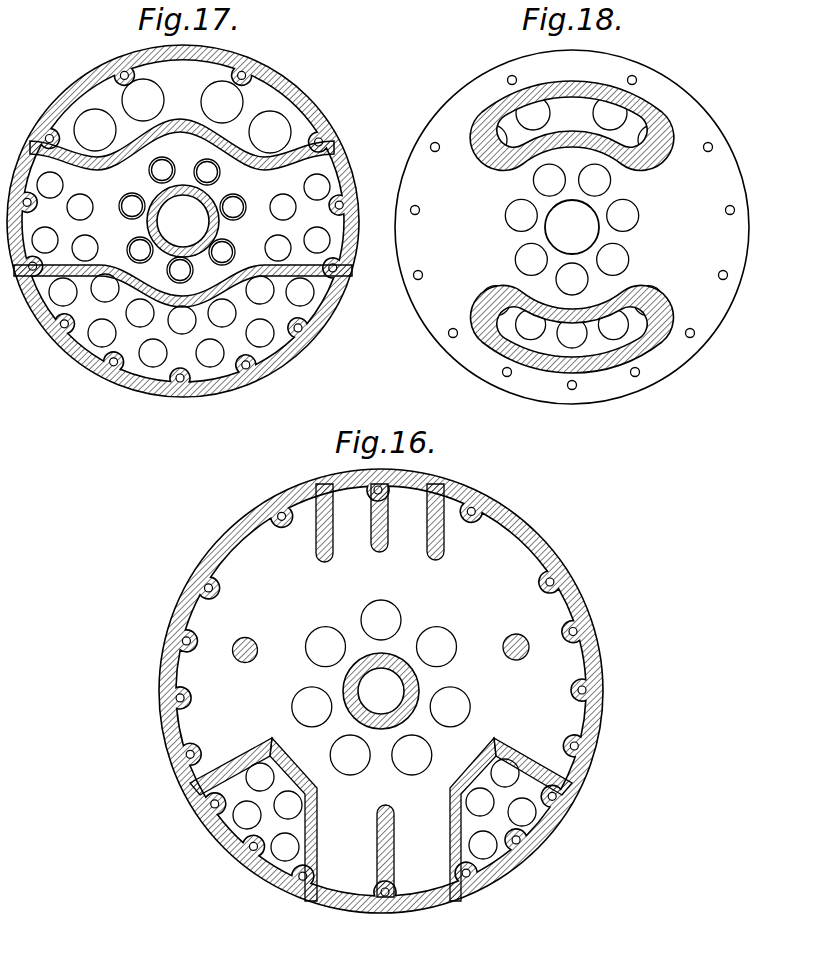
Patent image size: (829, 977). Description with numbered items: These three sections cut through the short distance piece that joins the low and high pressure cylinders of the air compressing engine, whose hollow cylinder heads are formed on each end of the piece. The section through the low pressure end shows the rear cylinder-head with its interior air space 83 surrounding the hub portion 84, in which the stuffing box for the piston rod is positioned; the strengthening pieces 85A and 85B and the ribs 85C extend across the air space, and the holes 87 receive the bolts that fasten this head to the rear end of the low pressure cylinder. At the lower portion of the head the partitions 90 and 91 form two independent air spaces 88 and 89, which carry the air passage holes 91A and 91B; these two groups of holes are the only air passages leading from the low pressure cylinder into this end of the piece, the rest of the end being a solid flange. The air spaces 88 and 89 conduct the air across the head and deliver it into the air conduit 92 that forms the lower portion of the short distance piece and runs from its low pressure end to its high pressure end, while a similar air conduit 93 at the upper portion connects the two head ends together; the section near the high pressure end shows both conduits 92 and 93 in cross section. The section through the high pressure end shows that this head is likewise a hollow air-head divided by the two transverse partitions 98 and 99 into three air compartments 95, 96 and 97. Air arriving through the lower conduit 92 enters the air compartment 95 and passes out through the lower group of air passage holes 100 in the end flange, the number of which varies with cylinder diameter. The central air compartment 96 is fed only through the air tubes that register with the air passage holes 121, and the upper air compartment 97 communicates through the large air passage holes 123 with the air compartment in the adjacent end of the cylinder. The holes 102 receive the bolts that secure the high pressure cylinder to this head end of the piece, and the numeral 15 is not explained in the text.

In FIG. 17, the plate 15 is at (113, 62).
In FIG. 18, the plate 15 is at (709, 329).
In FIG. 16, the plate 15 is at (606, 694).
In FIG. 16, the interior air space 83 is at (373, 679).
In FIG. 16, the hub portion 84 is at (418, 689).
In FIG. 16, the strengthening piece 85A is at (246, 662).
In FIG. 16, the strengthening piece 85B is at (516, 634).
In FIG. 16, the ribs 85C is at (329, 563).
In FIG. 16, the holes 87 is at (200, 586).
In FIG. 16, the air space 88 is at (197, 797).
In FIG. 16, the air space 89 is at (578, 786).
In FIG. 16, the partition 90 is at (320, 796).
In FIG. 16, the partition 91 is at (449, 793).
In FIG. 16, the air passage holes 91A is at (229, 815).
In FIG. 16, the air passage holes 91B is at (525, 818).
In FIG. 18, the air conduit 92 is at (555, 352).
In FIG. 18, the air conduit 93 is at (572, 114).
In FIG. 17, the air compartment 95 is at (181, 354).
In FIG. 17, the central air compartment 96 is at (181, 220).
In FIG. 17, the air compartment 97 is at (182, 109).
In FIG. 17, the transverse partition 98 is at (182, 144).
In FIG. 17, the transverse partition 99 is at (183, 286).
In FIG. 17, the air passage holes 100 is at (181, 354).
In FIG. 17, the holes 102 is at (247, 69).
In FIG. 18, the holes 102 is at (506, 77).
In FIG. 17, the air passage holes 121 is at (84, 211).
In FIG. 17, the large air passage holes 123 is at (182, 116).
In FIG. 18, the large air passage holes 123 is at (573, 76).